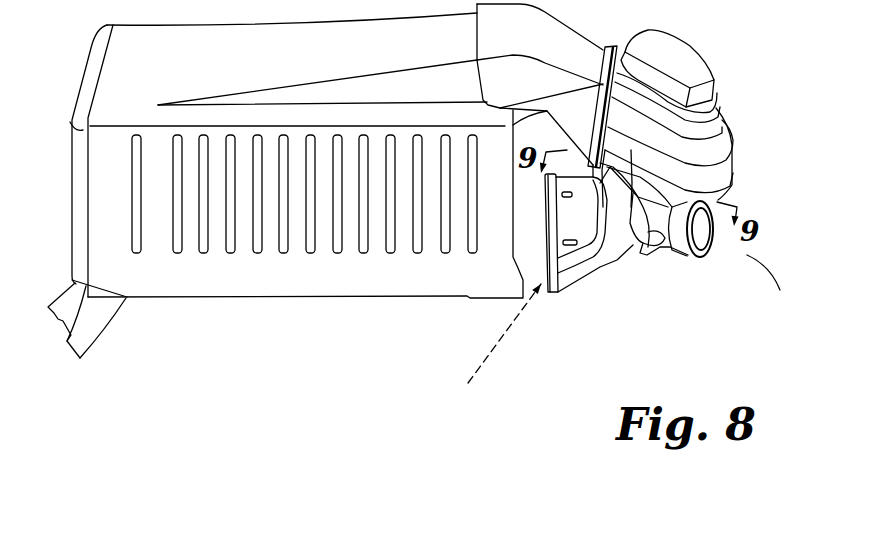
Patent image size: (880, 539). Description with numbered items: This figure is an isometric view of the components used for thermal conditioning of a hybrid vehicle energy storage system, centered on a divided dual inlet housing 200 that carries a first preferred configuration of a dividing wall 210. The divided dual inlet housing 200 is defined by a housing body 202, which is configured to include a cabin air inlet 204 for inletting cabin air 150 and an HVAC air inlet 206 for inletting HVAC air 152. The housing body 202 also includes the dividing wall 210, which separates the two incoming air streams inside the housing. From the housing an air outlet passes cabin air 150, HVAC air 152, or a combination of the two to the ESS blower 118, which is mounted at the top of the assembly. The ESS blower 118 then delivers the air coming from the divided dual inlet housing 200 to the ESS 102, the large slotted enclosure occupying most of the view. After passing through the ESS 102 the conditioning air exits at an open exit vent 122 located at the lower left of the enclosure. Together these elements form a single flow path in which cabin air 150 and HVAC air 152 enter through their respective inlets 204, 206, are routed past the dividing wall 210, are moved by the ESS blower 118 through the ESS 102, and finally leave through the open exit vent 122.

The ESS 102 is at (284, 298).
The ESS blower 118 is at (690, 44).
The open exit vent 122 is at (127, 297).
The cabin air 150 is at (492, 347).
The HVAC air 152 is at (747, 255).
The divided dual inlet housing 200 is at (650, 270).
The housing body 202 is at (601, 278).
The cabin air inlet 204 is at (547, 290).
The HVAC air inlet 206 is at (703, 238).
The dividing wall 210 is at (627, 207).